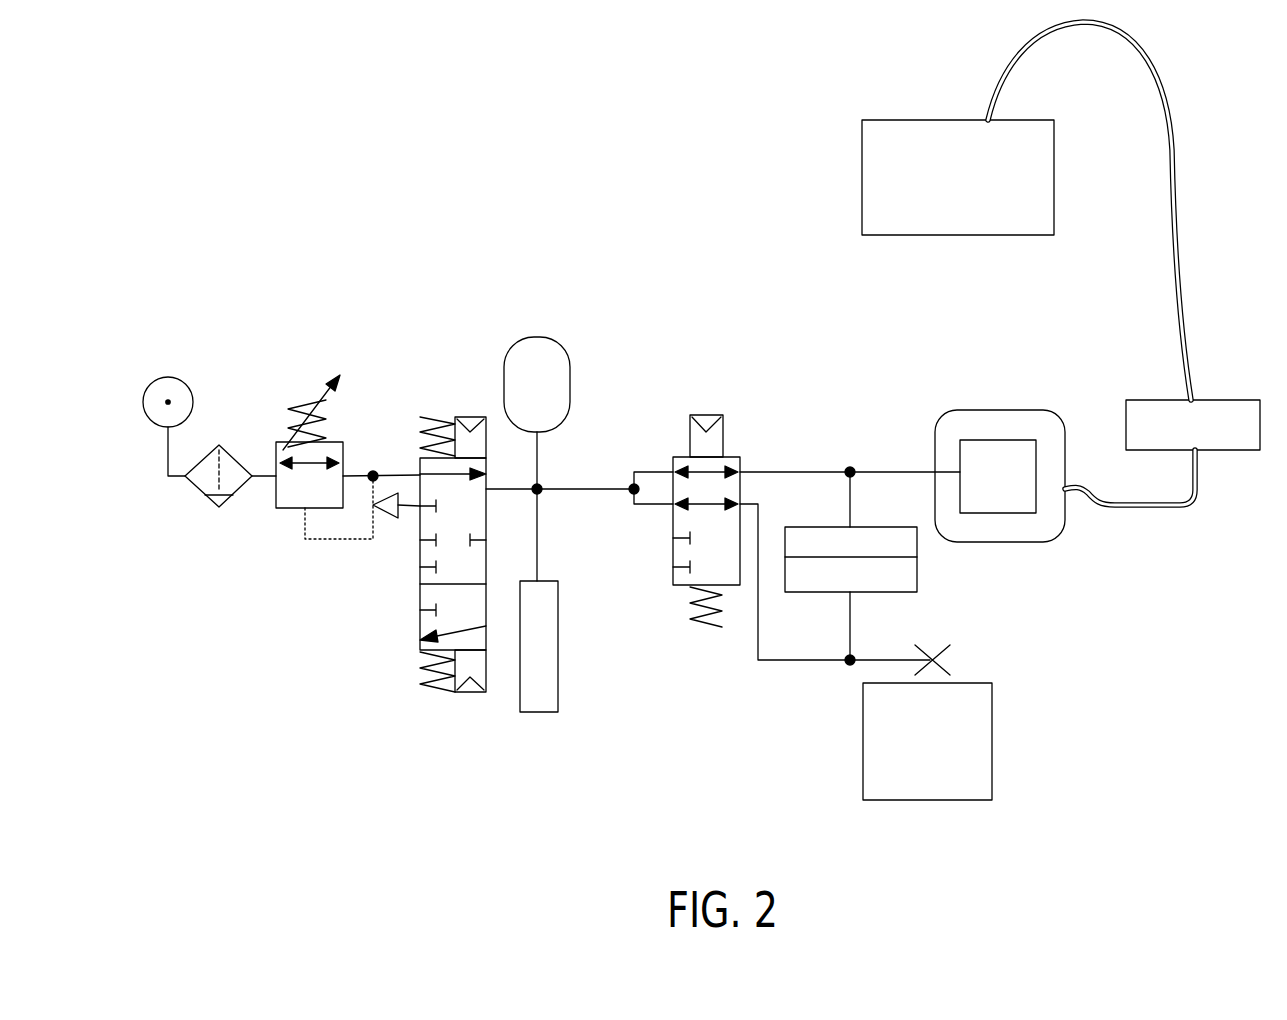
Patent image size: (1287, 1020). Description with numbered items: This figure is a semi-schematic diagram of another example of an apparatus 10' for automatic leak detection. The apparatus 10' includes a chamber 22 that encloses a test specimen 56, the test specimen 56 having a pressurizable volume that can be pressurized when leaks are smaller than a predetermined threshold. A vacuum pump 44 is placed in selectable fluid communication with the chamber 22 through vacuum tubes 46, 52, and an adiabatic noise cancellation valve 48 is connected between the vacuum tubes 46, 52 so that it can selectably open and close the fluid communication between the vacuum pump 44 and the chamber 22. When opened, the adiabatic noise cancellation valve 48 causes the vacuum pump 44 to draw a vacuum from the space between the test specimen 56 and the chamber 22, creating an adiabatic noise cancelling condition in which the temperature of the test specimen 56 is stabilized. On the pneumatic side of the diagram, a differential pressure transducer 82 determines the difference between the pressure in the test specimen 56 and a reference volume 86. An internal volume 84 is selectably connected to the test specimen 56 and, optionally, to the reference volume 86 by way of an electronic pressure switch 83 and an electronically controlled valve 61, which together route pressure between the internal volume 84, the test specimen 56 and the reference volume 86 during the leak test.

The apparatus for automatic leak detection 10' is at (406, 118).
The chamber 22 is at (1040, 410).
The vacuum pump 44 is at (938, 119).
The vacuum tube 46 is at (1182, 172).
The adiabatic noise cancellation valve 48 is at (1205, 439).
The vacuum tube 52 is at (1178, 512).
The test specimen 56 is at (980, 474).
The electronically controlled valve 61 is at (673, 587).
The differential pressure transducer 82 is at (934, 584).
The electronic pressure switch 83 is at (535, 712).
The internal volume 84 is at (570, 387).
The reference volume 86 is at (936, 752).